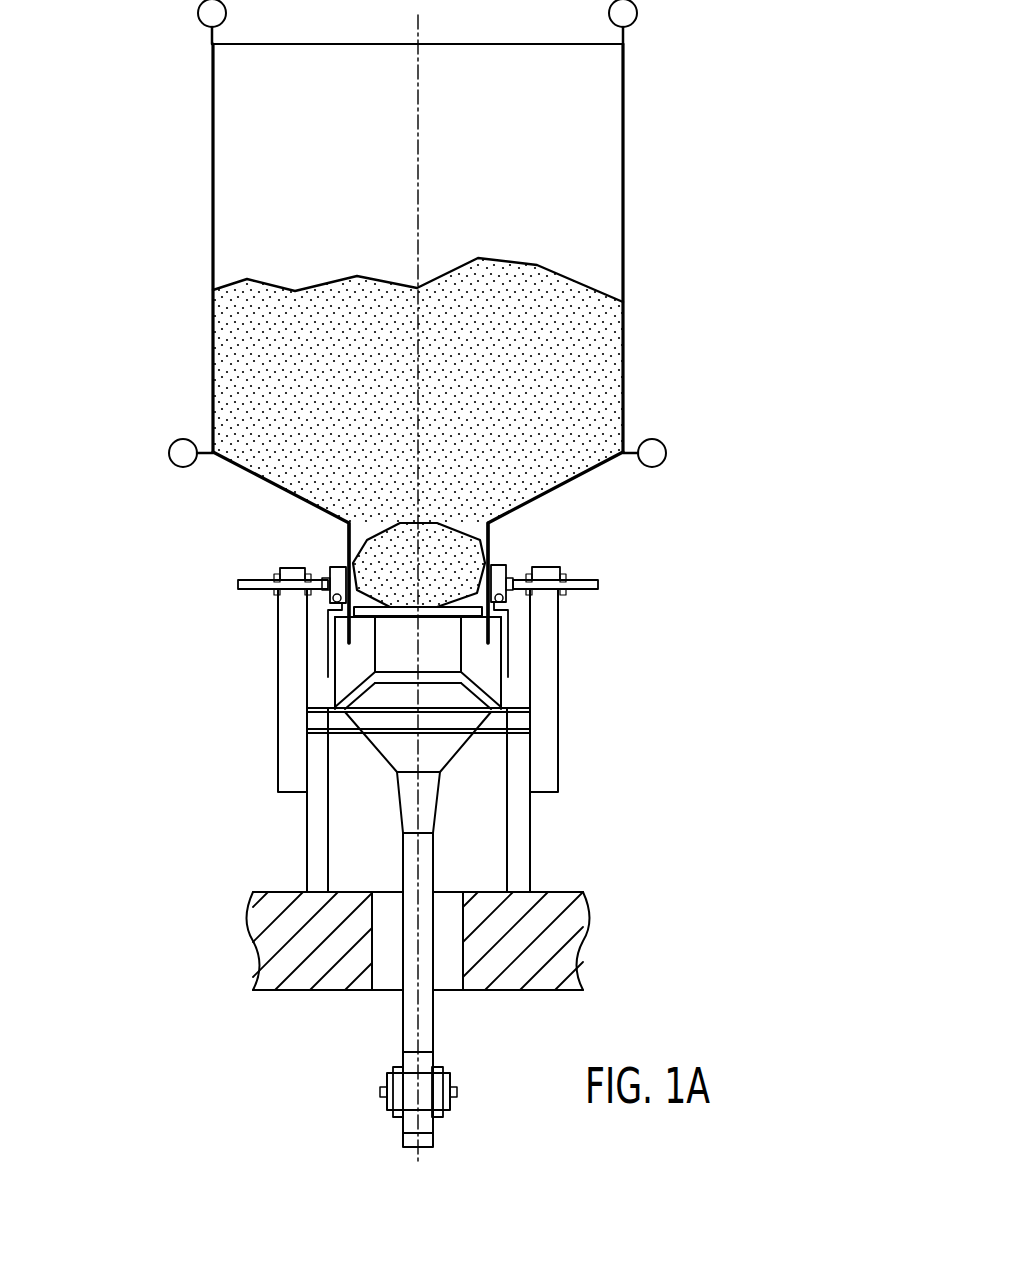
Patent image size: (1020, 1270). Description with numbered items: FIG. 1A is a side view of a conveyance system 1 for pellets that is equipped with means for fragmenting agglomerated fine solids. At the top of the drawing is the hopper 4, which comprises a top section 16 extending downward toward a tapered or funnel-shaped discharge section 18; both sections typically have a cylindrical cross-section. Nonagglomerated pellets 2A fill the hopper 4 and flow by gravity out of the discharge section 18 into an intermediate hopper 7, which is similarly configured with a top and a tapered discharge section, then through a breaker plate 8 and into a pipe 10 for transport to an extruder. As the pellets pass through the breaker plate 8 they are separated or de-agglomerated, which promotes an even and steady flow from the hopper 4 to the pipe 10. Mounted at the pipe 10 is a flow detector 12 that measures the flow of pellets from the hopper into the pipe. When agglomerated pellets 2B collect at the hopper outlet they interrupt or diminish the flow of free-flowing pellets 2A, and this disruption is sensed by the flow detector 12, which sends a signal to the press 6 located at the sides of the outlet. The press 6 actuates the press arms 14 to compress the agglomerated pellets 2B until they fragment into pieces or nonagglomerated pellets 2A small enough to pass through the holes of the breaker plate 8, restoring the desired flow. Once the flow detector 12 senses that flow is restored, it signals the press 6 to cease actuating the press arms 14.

The conveyance system 1 is at (150, 412).
The nonagglomerated pellets 2A is at (622, 363).
The agglomerated pellets 2B is at (365, 558).
The hopper 4 is at (605, 183).
The press 6 is at (503, 602).
The intermediate hopper 7 is at (340, 683).
The breaker plate 8 is at (467, 618).
The pipe 10 is at (403, 1025).
The flow detector 12 is at (472, 1090).
The press arms 14 is at (510, 580).
The top section 16 is at (623, 88).
The discharge section 18 is at (490, 533).